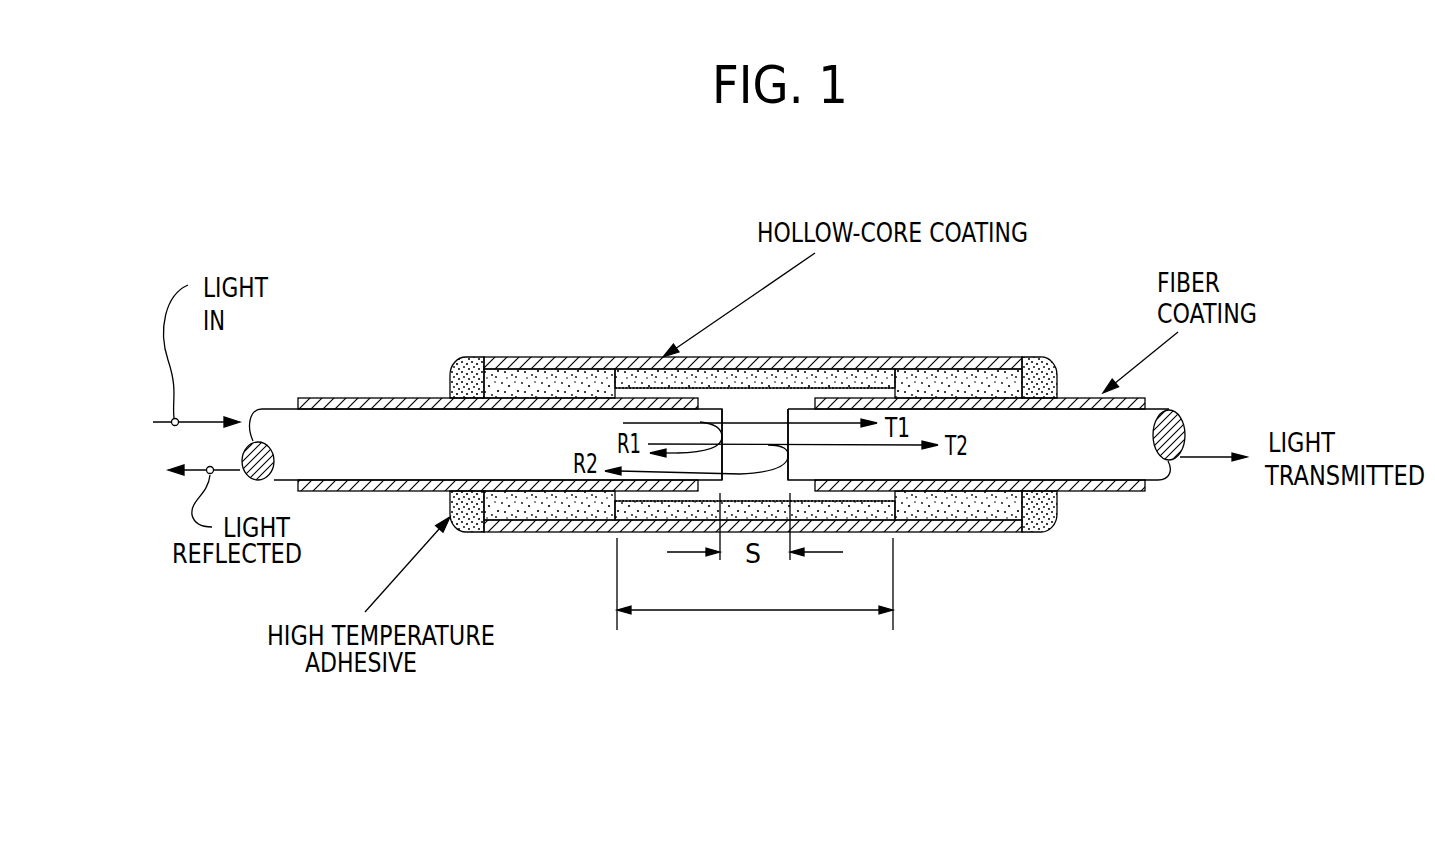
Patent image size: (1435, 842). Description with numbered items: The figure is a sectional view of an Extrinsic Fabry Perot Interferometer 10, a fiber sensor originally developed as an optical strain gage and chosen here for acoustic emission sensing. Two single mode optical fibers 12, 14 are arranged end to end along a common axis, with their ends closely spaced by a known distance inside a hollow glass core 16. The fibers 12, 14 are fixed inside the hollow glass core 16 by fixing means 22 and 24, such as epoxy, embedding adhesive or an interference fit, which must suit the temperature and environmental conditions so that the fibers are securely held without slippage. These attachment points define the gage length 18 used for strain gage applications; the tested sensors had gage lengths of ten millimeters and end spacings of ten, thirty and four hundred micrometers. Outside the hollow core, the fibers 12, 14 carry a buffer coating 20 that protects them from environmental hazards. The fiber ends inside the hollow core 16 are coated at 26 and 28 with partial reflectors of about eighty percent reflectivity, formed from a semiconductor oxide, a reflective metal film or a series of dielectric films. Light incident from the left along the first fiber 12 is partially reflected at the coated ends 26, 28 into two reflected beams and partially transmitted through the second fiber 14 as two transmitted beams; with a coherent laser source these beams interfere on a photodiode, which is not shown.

The Extrinsic Fabry Perot Interferometer 10 is at (585, 305).
The optical fiber 12 is at (330, 423).
The optical fiber 14 is at (1117, 470).
The hollow glass core 16 is at (917, 373).
The gage length 18 is at (850, 608).
The buffer coating 20 is at (398, 398).
The fixing means 22 is at (463, 360).
The fixing means 24 is at (1055, 377).
The partial reflector coating 26 is at (723, 410).
The partial reflector coating 28 is at (787, 410).